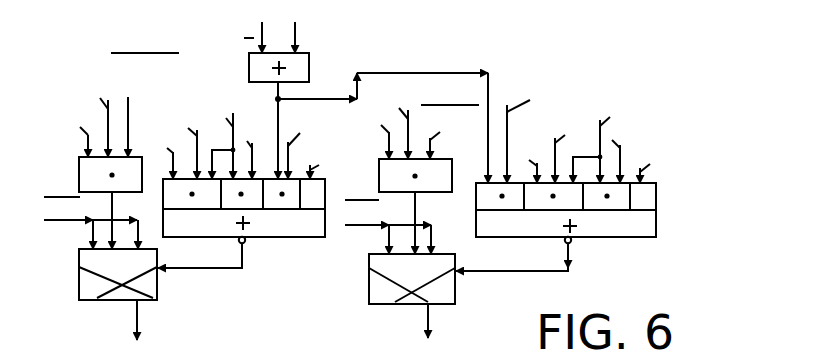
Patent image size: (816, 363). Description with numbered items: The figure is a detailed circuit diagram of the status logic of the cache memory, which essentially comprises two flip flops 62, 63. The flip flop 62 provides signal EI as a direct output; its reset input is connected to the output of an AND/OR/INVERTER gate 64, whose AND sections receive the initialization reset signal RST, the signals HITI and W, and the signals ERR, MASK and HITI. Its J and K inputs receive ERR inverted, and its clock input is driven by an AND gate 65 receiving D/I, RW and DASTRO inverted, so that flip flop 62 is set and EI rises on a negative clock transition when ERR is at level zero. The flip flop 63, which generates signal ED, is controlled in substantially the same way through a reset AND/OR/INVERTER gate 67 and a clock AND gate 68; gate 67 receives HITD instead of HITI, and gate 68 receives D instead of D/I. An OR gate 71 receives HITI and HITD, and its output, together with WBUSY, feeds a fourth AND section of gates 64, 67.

The flip flop 62 is at (157, 286).
The flip flop 63 is at (455, 288).
The AND/OR/INVERTER gate 64 is at (268, 238).
The AND gate 65 is at (79, 174).
The AND/OR/INVERTER gate 67 is at (596, 240).
The AND gate 68 is at (379, 172).
The OR gate 71 is at (309, 77).